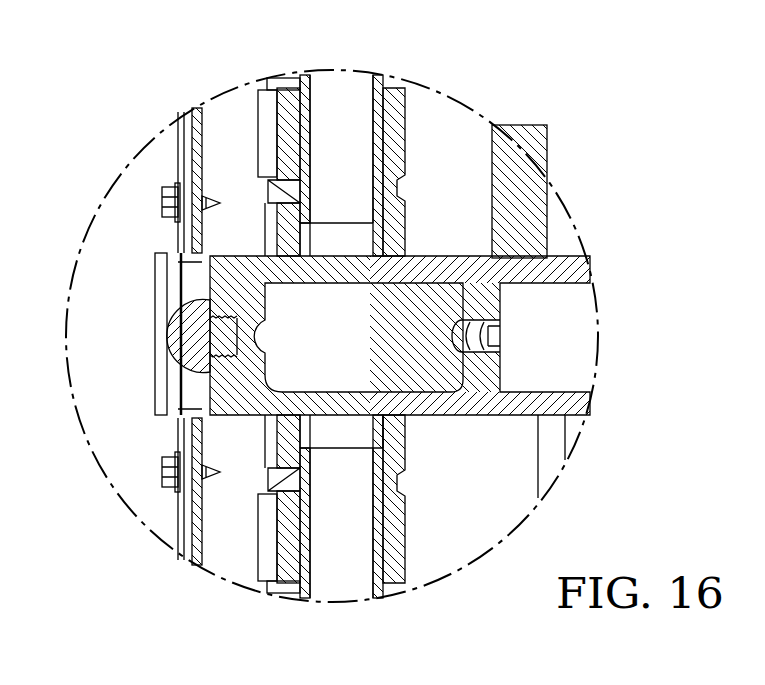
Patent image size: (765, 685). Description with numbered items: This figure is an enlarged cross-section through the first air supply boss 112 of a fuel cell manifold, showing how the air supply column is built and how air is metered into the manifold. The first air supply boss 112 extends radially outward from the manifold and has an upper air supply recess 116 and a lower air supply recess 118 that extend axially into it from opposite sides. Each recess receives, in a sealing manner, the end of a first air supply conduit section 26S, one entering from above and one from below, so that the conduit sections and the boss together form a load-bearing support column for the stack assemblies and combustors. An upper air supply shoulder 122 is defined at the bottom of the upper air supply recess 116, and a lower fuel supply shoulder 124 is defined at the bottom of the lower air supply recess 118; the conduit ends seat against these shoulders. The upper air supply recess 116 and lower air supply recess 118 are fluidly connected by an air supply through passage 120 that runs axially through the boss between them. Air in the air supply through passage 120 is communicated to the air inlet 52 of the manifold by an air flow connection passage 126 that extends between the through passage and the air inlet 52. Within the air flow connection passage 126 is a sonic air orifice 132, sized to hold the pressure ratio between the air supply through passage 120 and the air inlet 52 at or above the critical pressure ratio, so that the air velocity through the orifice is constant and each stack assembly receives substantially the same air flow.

The upper air supply recess 116 is at (298, 222).
The upper air supply shoulder 122 is at (303, 217).
The first air supply conduit section 26S is at (383, 82).
The air supply through passage 120 is at (285, 312).
The sonic air orifice 132 is at (490, 322).
The air inlet 52 is at (575, 320).
The air flow connection passage 126 is at (467, 345).
The first air supply boss 112 is at (222, 402).
The lower fuel supply shoulder 124 is at (397, 473).
The lower air supply recess 118 is at (300, 468).